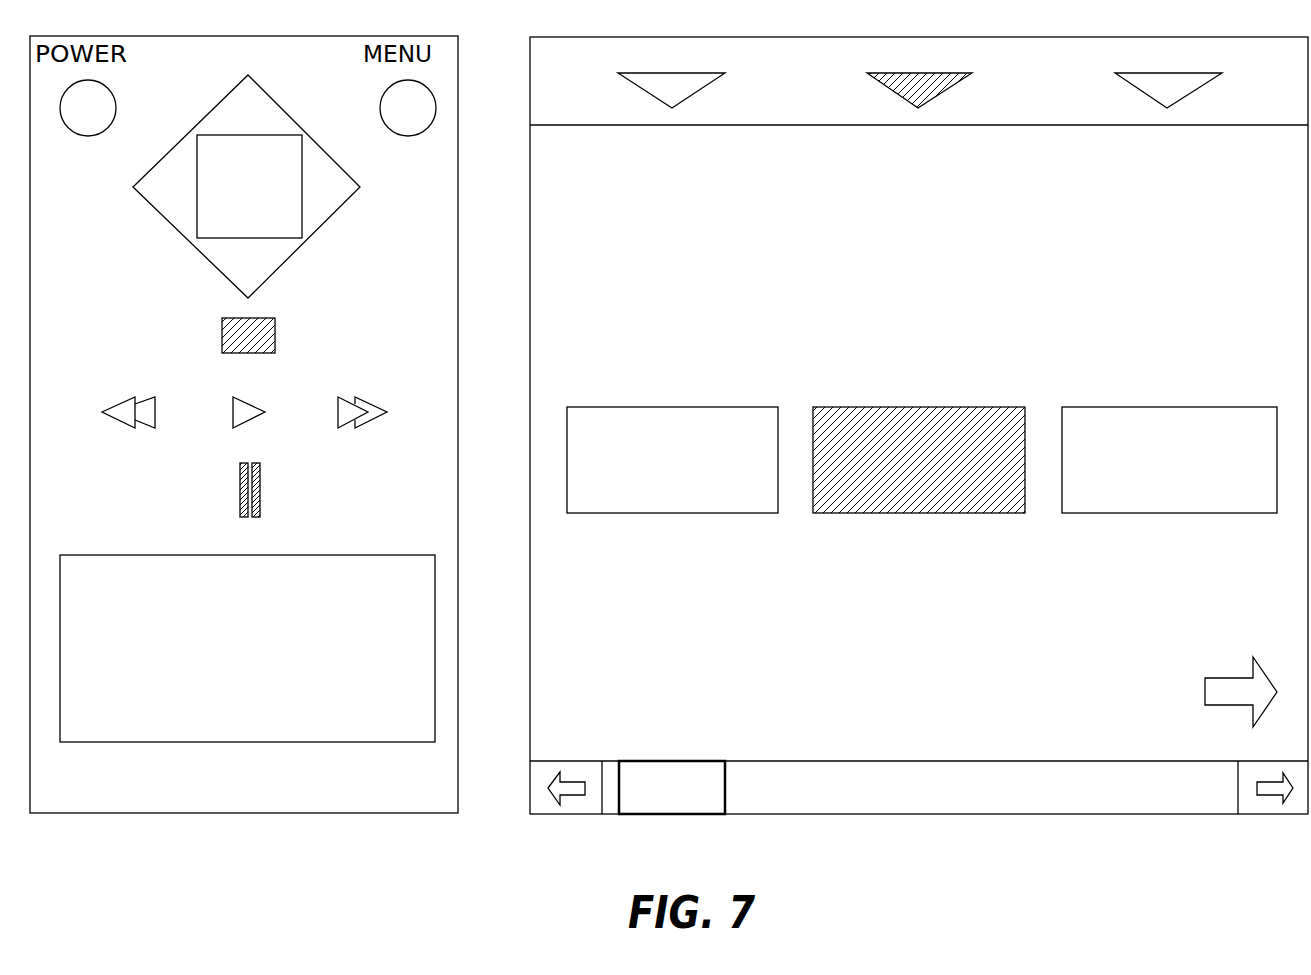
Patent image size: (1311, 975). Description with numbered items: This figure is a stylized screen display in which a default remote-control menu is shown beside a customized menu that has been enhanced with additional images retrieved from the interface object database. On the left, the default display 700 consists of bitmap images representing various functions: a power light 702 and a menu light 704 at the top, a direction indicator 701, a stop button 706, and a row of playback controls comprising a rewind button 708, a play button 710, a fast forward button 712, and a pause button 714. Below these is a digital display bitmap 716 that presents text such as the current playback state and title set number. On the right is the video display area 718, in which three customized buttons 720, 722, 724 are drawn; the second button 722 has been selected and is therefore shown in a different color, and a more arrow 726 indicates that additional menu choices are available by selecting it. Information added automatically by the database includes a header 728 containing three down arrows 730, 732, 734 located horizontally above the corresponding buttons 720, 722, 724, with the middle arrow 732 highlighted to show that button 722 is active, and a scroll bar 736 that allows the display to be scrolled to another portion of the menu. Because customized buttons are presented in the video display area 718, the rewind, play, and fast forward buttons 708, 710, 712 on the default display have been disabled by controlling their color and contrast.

The default remote control display 700 is at (250, 450).
The direction indicator 701 is at (226, 186).
The power light 702 is at (122, 108).
The menu light 704 is at (370, 106).
The stop button 706 is at (292, 335).
The rewind button 708 is at (153, 451).
The play button 710 is at (280, 400).
The fast forward button 712 is at (381, 400).
The pause button 714 is at (301, 490).
The digital display bitmap 716 is at (121, 728).
The video display area 718 is at (919, 459).
The first button 720 is at (672, 434).
The second button 722 is at (919, 434).
The third button 724 is at (1169, 434).
The more arrow 726 is at (1197, 675).
The header 728 is at (919, 143).
The down arrow 730 is at (693, 123).
The middle down arrow 732 is at (933, 114).
The down arrow 734 is at (1182, 123).
The scroll bar 736 is at (919, 763).